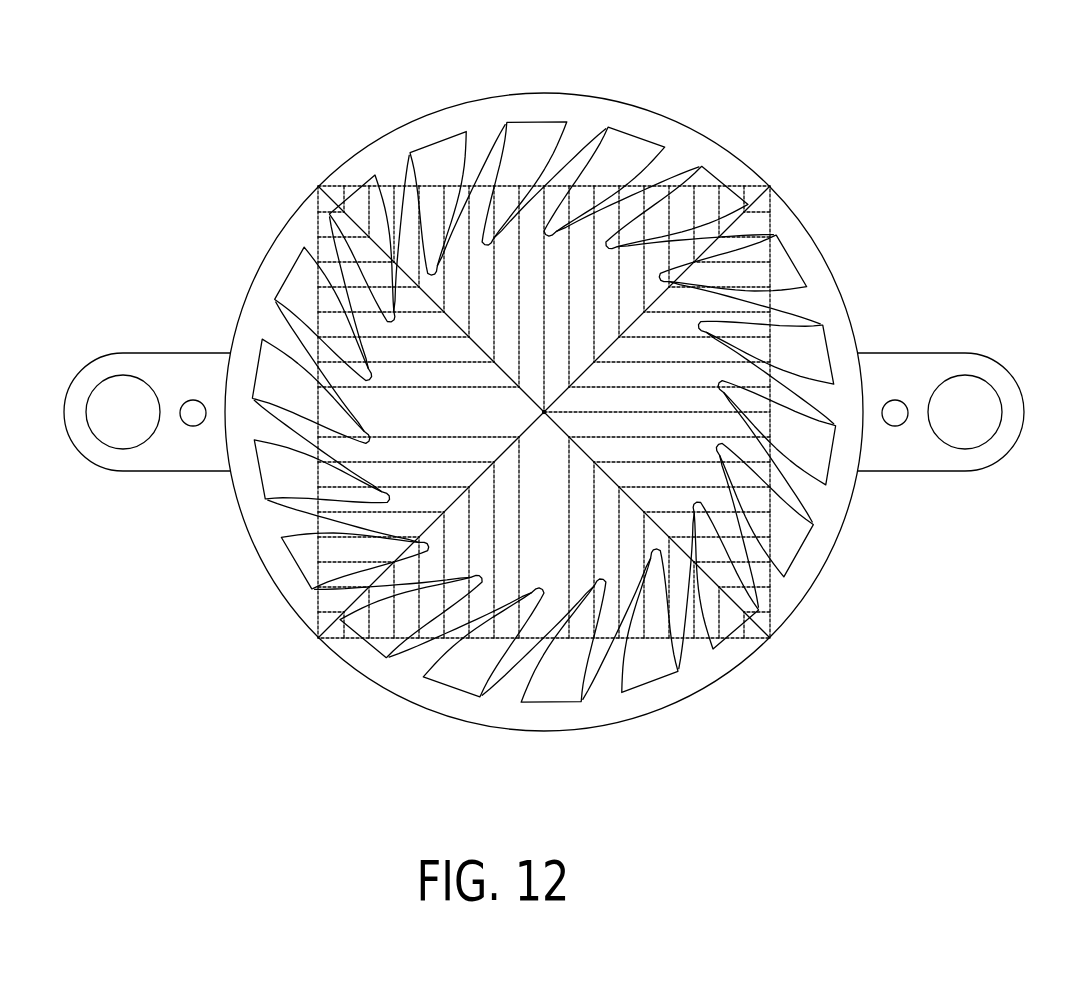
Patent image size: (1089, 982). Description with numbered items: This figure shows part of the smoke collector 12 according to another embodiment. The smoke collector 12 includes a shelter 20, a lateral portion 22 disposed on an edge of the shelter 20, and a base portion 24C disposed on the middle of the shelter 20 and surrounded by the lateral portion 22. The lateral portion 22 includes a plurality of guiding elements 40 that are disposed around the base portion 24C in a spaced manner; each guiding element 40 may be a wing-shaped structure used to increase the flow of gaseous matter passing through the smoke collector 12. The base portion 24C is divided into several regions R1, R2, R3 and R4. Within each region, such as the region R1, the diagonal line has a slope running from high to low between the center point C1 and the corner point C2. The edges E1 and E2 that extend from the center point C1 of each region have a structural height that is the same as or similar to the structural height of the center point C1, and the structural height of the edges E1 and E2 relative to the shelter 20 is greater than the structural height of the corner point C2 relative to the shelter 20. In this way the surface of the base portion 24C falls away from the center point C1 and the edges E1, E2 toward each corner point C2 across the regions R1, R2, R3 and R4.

The smoke collector 12 is at (982, 107).
The shelter 20 is at (544, 450).
The lateral portion 22 is at (810, 247).
The guiding element 40 is at (588, 415).
The base portion 24C is at (500, 578).
The center point C1 is at (546, 416).
The corner point C2 is at (727, 233).
The edge E1 is at (550, 290).
The edge E2 is at (682, 411).
The region R1 is at (708, 245).
The region R2 is at (748, 611).
The region R3 is at (363, 588).
The region R4 is at (340, 209).